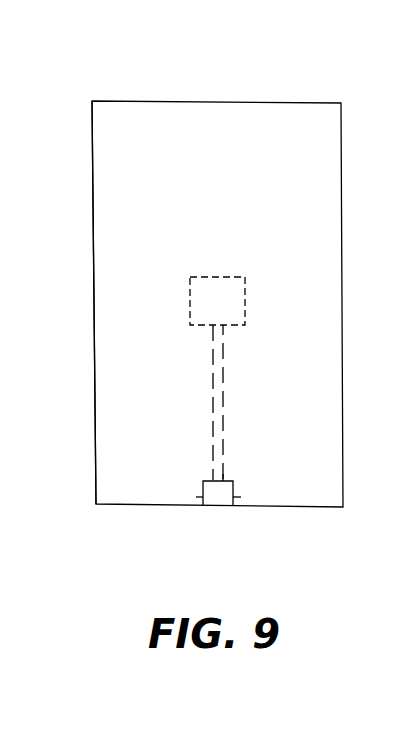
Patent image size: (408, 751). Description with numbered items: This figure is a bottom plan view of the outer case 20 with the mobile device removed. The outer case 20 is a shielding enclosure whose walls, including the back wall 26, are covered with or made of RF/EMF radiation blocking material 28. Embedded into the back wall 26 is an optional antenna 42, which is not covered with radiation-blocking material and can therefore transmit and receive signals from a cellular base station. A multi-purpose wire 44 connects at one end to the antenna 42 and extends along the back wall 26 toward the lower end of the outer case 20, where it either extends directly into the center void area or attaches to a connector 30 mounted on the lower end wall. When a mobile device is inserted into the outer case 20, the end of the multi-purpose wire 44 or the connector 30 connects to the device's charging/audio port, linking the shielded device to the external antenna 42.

The outer case 20 is at (108, 97).
The back wall 26 is at (279, 181).
The RF/EMF radiation blocking material 28 is at (93, 152).
The connector 30 is at (216, 500).
The antenna 42 is at (193, 298).
The multi-purpose wire 44 is at (213, 381).